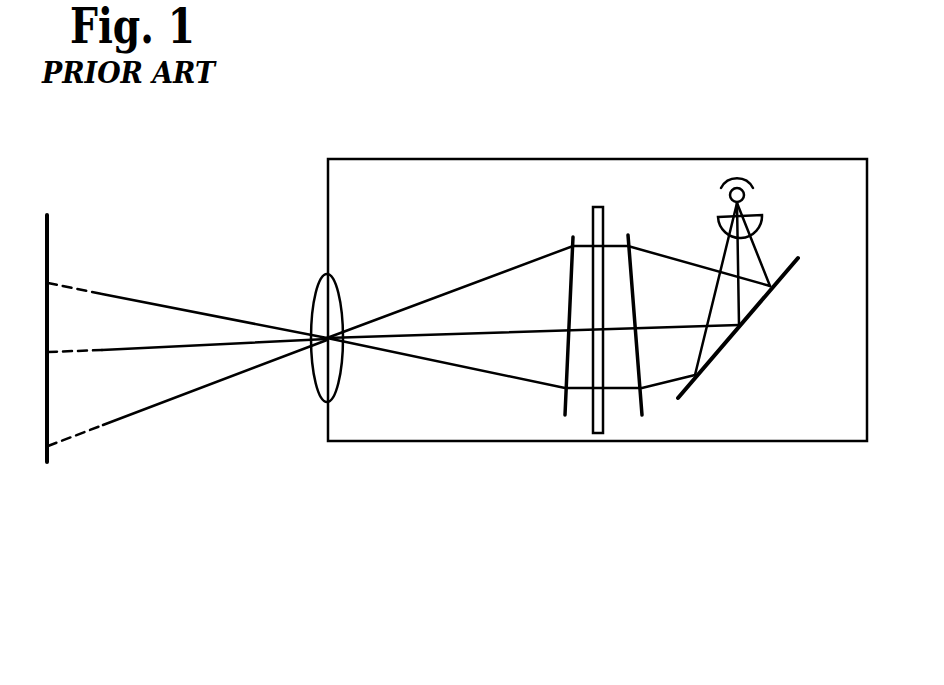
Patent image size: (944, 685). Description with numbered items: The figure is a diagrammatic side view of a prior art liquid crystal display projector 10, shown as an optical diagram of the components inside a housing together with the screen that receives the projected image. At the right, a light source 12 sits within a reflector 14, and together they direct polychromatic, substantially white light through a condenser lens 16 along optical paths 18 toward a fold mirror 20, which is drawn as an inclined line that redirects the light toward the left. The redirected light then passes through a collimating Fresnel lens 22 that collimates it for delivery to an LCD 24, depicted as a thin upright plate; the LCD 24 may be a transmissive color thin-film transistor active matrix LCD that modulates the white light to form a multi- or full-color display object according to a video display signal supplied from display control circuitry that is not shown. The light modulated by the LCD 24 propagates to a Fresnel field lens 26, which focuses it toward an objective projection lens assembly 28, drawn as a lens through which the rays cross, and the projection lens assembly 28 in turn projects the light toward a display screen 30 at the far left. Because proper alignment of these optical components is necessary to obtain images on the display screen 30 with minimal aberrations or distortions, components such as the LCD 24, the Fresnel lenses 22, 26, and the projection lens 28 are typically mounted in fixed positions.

The liquid crystal display projector 10 is at (755, 98).
The light source 12 is at (744, 195).
The reflector 14 is at (741, 175).
The condenser lens 16 is at (762, 222).
The optical paths 18 is at (716, 248).
The fold mirror 20 is at (760, 303).
The collimating Fresnel lens 22 is at (640, 367).
The LCD 24 is at (603, 222).
The Fresnel field lens 26 is at (570, 263).
The objective projection lens assembly 28 is at (340, 287).
The display screen 30 is at (50, 232).